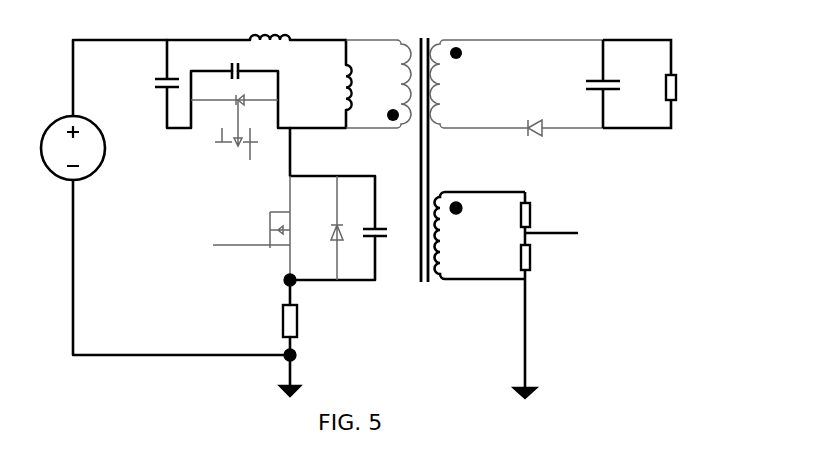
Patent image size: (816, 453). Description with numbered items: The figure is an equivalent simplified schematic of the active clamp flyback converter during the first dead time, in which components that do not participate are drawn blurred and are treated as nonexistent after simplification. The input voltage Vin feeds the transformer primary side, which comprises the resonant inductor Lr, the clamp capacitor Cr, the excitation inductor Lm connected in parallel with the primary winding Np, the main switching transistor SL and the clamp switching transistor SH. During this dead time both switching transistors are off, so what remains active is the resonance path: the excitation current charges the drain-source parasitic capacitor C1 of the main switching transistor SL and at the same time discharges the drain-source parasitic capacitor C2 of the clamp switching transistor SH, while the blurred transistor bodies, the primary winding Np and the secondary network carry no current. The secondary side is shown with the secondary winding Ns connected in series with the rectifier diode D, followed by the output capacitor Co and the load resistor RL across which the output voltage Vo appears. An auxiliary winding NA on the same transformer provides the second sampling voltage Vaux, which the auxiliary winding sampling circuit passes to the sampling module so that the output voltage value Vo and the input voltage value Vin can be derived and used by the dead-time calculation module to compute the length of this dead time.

The input voltage value Vin is at (57, 148).
The resonant inductor Lr is at (270, 26).
The clamp capacitor Cr is at (153, 84).
The drain-source parasitic capacitor of the clamp switching transistor C2 is at (245, 66).
The excitation inductor Lm is at (331, 87).
The clamp switching transistor SH is at (234, 134).
The main switching transistor SL is at (278, 228).
The drain-source parasitic capacitor of the main switching transistor C1 is at (388, 232).
The primary winding Np is at (378, 84).
The secondary winding Ns is at (516, 84).
The rectifier diode D is at (535, 120).
The output capacitor Co is at (590, 84).
The load resistor RL is at (639, 84).
The output voltage value Vo is at (693, 84).
The auxiliary winding NA is at (480, 235).
The second sampling voltage Vaux is at (565, 295).